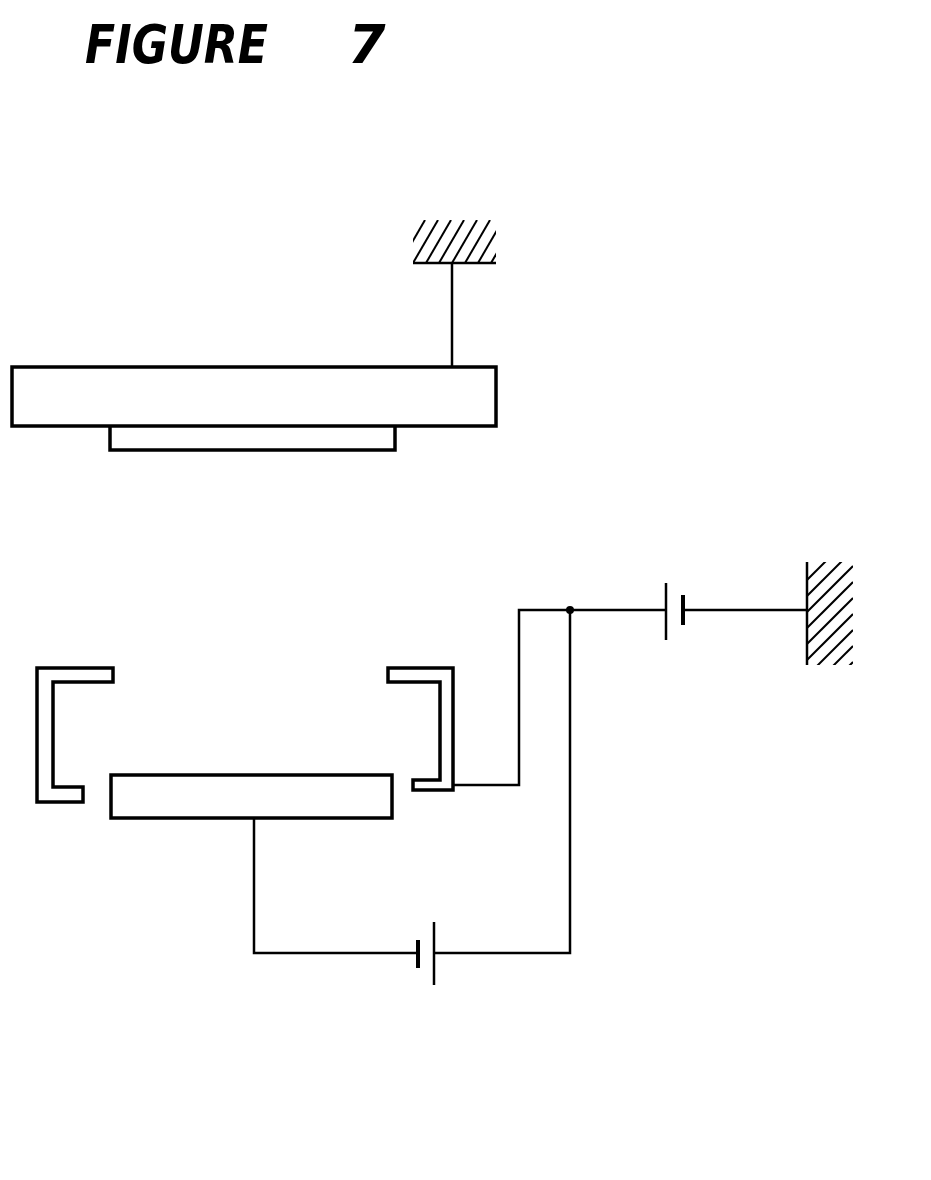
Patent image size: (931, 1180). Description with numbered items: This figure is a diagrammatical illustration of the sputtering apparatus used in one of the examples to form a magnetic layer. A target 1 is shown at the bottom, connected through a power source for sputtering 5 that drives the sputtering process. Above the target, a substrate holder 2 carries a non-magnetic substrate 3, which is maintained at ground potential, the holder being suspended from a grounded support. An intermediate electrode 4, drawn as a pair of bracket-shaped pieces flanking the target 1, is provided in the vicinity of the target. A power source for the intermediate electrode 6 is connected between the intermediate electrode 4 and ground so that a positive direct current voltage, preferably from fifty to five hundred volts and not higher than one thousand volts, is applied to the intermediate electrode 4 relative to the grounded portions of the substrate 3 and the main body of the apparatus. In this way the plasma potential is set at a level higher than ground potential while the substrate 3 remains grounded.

The target 1 is at (175, 798).
The substrate holder 2 is at (475, 393).
The non-magnetic substrate 3 is at (295, 435).
The intermediate electrode 4 is at (62, 802).
The power source for sputtering 5 is at (434, 975).
The power source for the intermediate electrode 6 is at (666, 637).